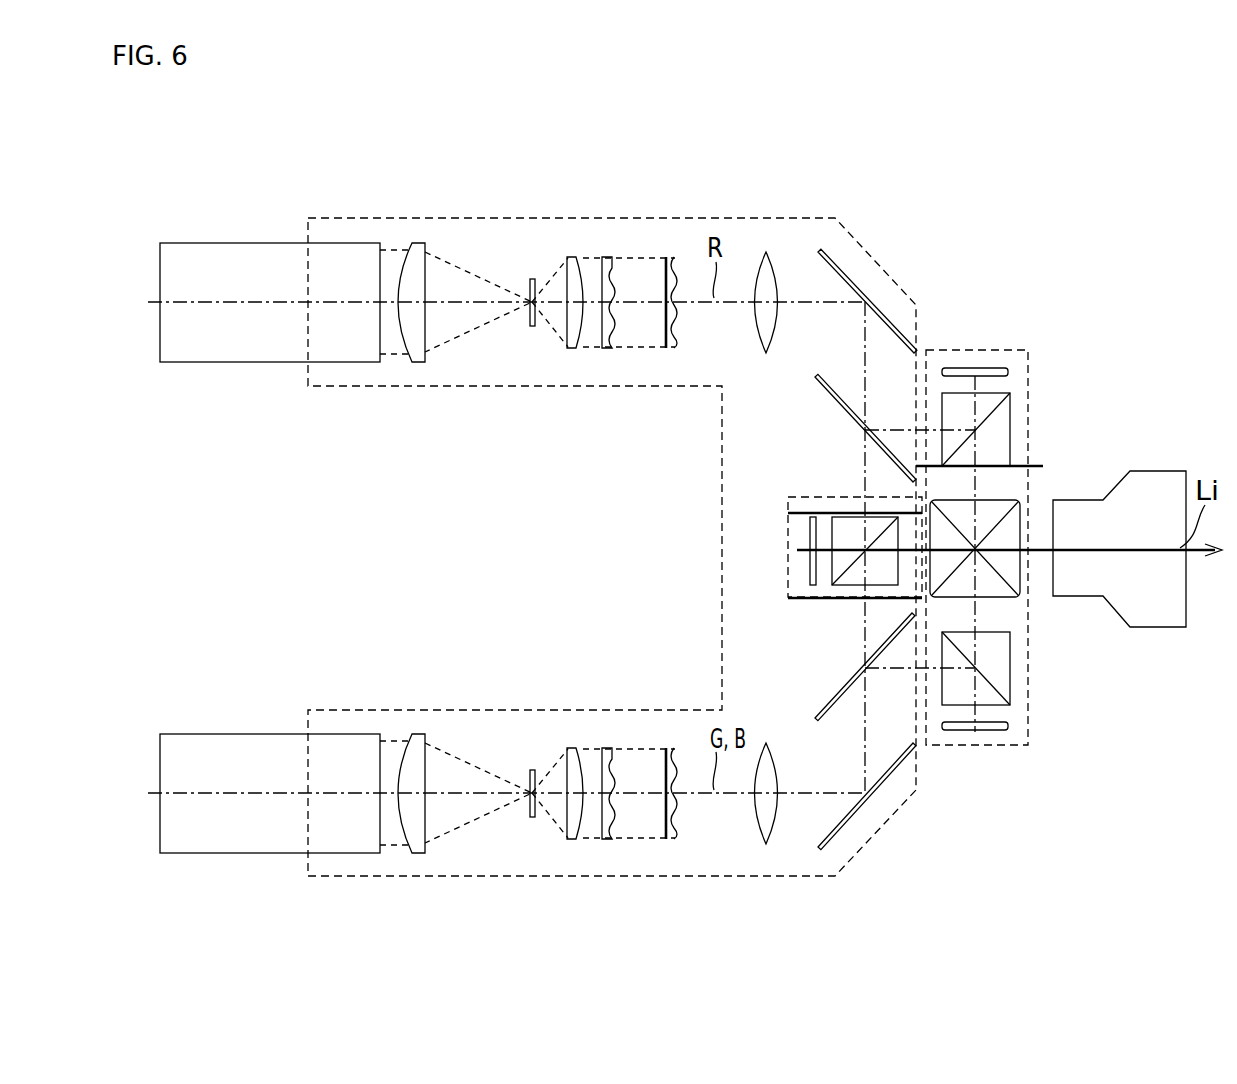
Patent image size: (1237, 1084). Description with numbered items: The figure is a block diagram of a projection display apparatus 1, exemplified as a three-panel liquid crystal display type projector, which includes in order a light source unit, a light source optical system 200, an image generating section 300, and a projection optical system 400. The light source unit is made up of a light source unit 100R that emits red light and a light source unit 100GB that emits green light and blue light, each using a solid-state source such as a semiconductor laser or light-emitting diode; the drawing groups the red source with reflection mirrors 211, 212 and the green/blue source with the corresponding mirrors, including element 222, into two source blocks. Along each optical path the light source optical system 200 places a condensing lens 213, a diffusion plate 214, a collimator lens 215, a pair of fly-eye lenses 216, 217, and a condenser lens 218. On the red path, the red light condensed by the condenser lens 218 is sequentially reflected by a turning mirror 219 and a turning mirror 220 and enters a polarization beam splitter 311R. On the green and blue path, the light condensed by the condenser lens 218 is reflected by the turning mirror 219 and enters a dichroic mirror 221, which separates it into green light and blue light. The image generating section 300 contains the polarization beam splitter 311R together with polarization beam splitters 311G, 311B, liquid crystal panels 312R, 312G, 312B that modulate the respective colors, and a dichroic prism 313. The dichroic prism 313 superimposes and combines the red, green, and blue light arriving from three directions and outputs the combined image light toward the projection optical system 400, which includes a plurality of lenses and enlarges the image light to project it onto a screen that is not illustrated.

The projection display apparatus 1 is at (968, 160).
The light source optical system 200 is at (575, 190).
The image generating section 300 is at (1030, 768).
The projection optical system 400 is at (1155, 470).
The light source unit 100R is at (270, 268).
The light source unit 100GB is at (292, 759).
The reflection mirror 211 is at (270, 268).
The reflection mirror 212 is at (243, 243).
The wavelength conversion element 222 is at (243, 734).
The condensing lens 213 is at (415, 364).
The diffusion plate 214 is at (532, 328).
The collimator lens 215 is at (577, 350).
The fly-eye lens 216 is at (607, 350).
The fly-eye lens 217 is at (670, 350).
The condenser lens 218 is at (766, 250).
The turning mirror 219 is at (853, 283).
The turning mirror 220 is at (832, 400).
The dichroic mirror 221 is at (832, 697).
The polarization beam splitter 311R is at (1010, 428).
The polarization beam splitter 311G is at (832, 568).
The polarization beam splitter 311B is at (1010, 686).
The liquid crystal panel 312R is at (976, 368).
The liquid crystal panel 312G is at (810, 530).
The liquid crystal panel 312B is at (976, 730).
The dichroic prism 313 is at (1022, 598).